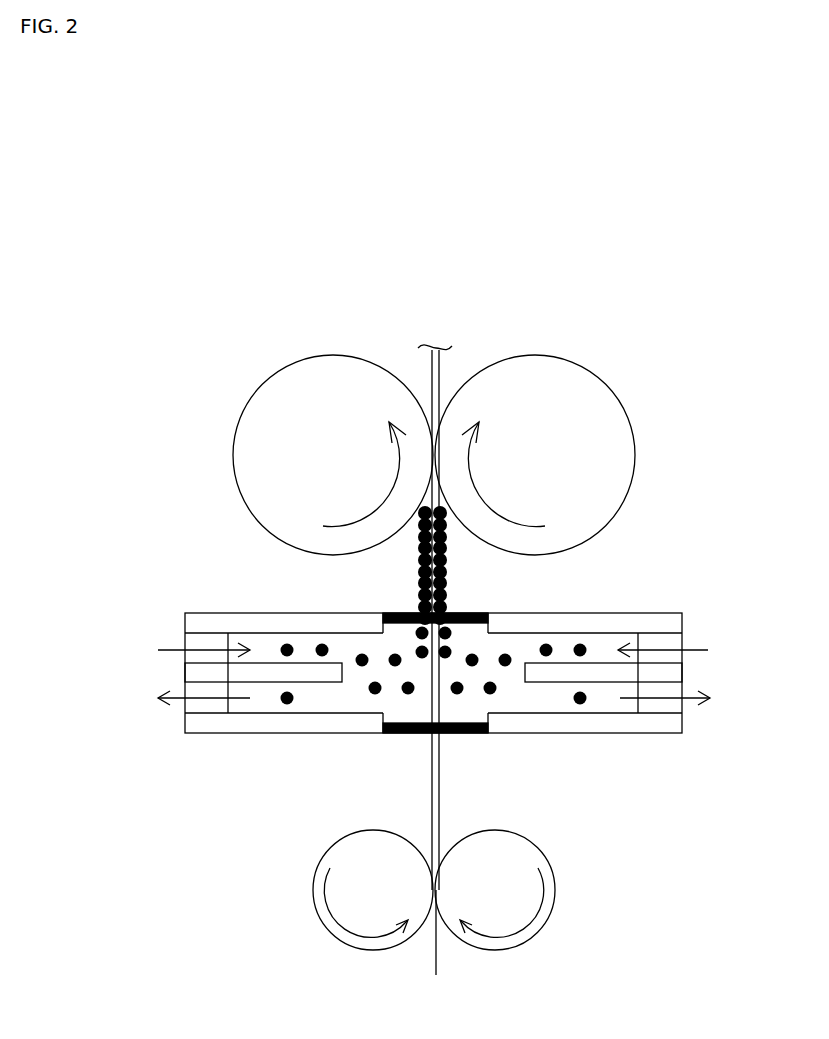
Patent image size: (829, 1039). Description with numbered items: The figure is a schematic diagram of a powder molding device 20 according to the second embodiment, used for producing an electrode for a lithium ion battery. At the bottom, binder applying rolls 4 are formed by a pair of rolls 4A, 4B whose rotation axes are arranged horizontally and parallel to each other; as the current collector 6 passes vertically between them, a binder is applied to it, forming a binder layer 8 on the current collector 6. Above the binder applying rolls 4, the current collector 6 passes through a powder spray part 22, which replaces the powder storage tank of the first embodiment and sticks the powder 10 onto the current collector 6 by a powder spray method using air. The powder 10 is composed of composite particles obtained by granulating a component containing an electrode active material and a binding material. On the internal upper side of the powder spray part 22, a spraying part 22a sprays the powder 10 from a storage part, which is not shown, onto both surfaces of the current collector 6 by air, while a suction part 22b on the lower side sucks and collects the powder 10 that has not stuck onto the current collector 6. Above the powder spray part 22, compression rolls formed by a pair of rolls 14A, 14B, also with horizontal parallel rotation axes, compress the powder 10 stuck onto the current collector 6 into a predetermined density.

The powder molding device 20 is at (448, 403).
The compression roll 14A is at (290, 394).
The compression roll 14B is at (597, 412).
The powder spray part 22 is at (446, 650).
The spraying part 22a is at (265, 642).
The suction part 22b is at (262, 705).
The powder 10 is at (390, 656).
The binder layer 8 is at (431, 785).
The binder applying rolls 4 is at (461, 911).
The binder applying roll 4A is at (343, 933).
The binder applying roll 4B is at (513, 938).
The current collector 6 is at (437, 955).